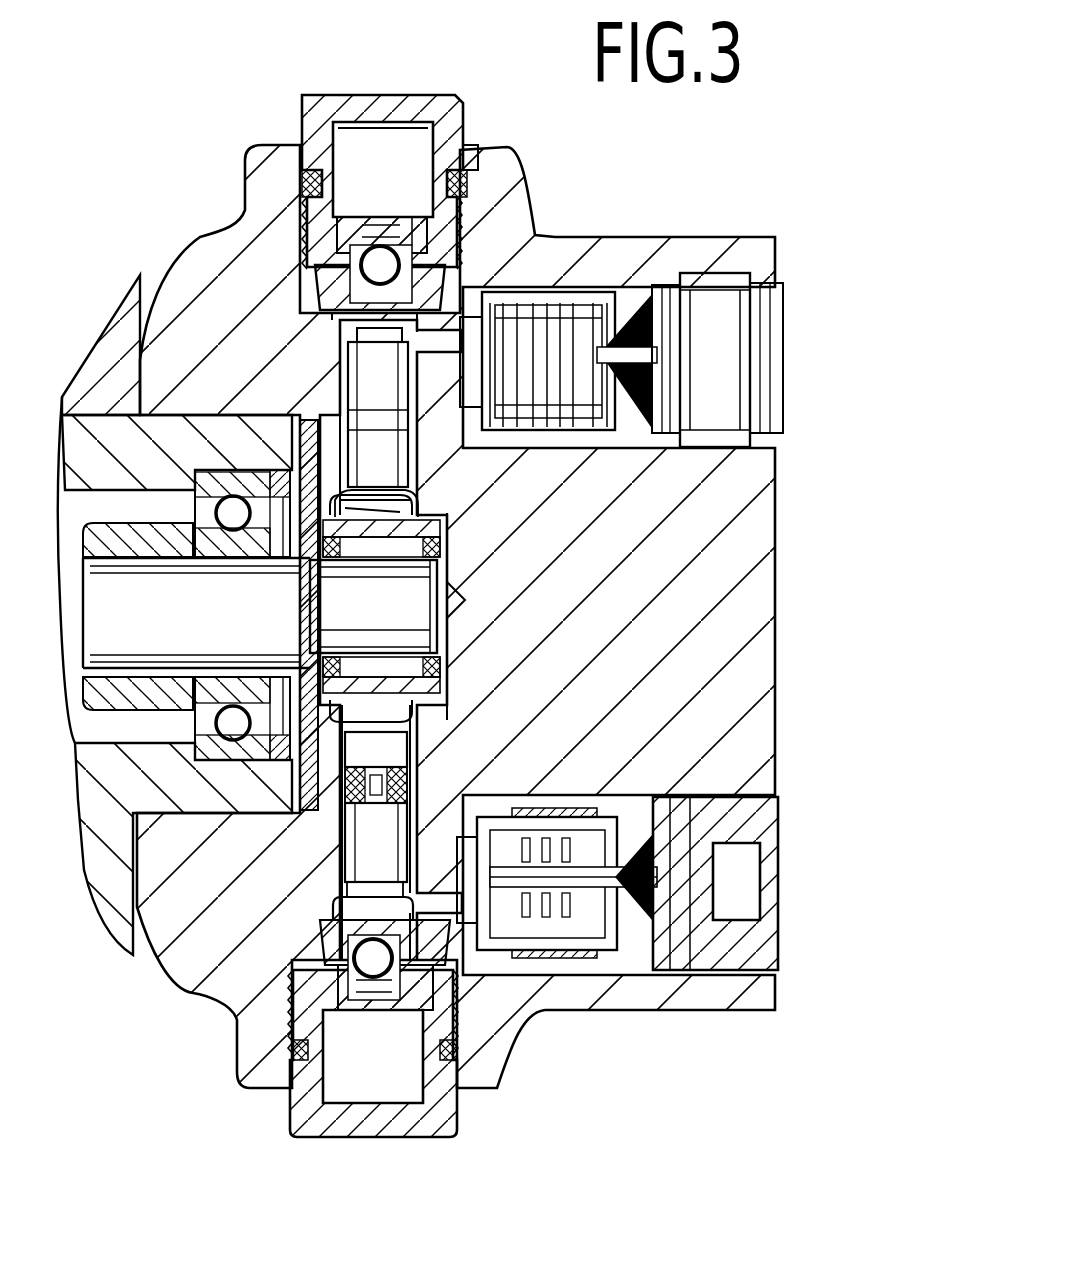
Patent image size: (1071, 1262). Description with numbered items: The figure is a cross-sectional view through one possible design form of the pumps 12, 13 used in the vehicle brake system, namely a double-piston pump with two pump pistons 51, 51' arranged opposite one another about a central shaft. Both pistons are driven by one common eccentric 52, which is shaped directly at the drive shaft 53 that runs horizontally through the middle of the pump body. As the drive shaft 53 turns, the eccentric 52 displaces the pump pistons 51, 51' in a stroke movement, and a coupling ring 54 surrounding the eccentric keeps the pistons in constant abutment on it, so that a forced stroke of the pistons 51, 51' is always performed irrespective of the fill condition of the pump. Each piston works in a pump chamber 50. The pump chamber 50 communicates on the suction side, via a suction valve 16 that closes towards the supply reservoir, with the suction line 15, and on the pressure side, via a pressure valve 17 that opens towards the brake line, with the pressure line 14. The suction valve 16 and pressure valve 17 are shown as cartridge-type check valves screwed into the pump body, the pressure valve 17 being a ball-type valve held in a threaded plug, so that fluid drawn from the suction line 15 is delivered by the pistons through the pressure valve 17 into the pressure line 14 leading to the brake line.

The pump 12 is at (240, 861).
The pump 13 is at (262, 322).
The pressure line 14 is at (400, 1095).
The suction line 15 is at (770, 892).
The suction valve 16 is at (540, 792).
The pressure valve 17 is at (368, 957).
The pump chamber 50 is at (345, 905).
The pump piston 51 is at (376, 832).
The pump piston 51' is at (378, 417).
The eccentric 52 is at (355, 619).
The drive shaft 53 is at (183, 619).
The coupling ring 54 is at (365, 500).